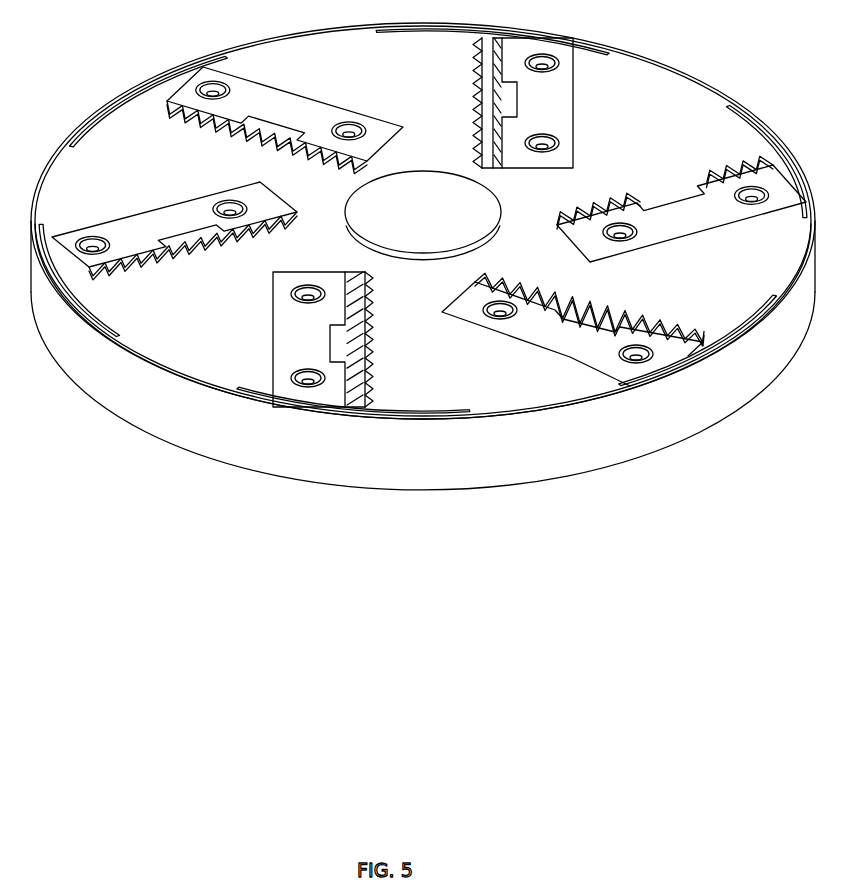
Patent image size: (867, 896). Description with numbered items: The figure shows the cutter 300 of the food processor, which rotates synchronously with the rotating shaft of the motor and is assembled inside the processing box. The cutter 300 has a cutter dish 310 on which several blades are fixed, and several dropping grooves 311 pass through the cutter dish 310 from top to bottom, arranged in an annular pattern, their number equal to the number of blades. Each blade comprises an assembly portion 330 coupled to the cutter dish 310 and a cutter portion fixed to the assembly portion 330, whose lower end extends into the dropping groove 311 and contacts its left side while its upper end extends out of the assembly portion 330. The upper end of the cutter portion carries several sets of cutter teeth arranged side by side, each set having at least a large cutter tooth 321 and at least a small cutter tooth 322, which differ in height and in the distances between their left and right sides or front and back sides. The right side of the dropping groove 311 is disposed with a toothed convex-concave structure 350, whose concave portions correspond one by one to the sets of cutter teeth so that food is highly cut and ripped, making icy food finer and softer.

The cutter 300 is at (423, 371).
The cutter dish 310 is at (524, 378).
The dropping groove 311 is at (360, 357).
The large cutter tooth 321 is at (696, 343).
The small cutter tooth 322 is at (675, 335).
The assembly portion 330 is at (305, 349).
The convex-concave structure 350 is at (387, 329).